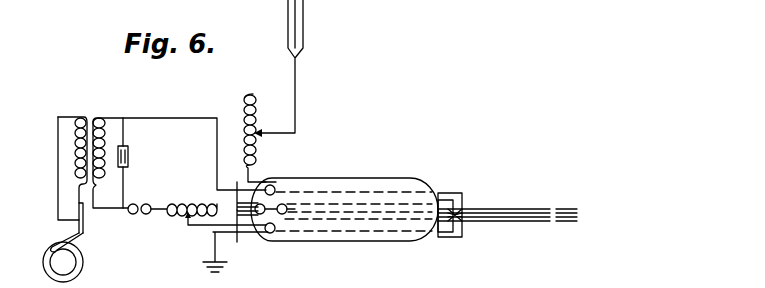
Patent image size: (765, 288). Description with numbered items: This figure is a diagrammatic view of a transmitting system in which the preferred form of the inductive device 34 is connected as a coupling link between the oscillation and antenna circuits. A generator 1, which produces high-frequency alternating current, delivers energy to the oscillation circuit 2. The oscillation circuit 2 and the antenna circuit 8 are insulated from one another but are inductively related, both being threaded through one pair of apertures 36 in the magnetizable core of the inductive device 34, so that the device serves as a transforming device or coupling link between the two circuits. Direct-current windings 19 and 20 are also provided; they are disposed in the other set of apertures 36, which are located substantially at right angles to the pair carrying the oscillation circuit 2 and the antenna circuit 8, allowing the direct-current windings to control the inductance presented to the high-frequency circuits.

The generator 1 is at (63, 199).
The oscillation circuit 2 is at (170, 117).
The antenna circuit 8 is at (249, 172).
The direct current winding 19 is at (240, 188).
The direct current winding 20 is at (247, 237).
The inductive device 34 is at (336, 178).
The apertures 36 is at (287, 186).